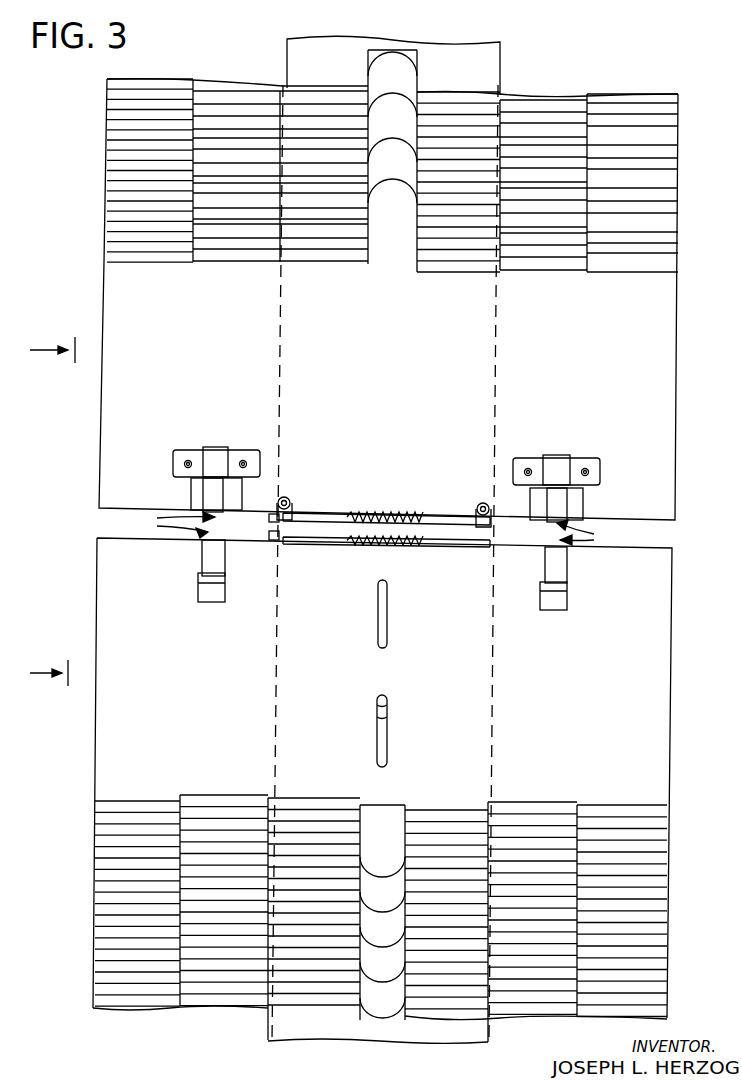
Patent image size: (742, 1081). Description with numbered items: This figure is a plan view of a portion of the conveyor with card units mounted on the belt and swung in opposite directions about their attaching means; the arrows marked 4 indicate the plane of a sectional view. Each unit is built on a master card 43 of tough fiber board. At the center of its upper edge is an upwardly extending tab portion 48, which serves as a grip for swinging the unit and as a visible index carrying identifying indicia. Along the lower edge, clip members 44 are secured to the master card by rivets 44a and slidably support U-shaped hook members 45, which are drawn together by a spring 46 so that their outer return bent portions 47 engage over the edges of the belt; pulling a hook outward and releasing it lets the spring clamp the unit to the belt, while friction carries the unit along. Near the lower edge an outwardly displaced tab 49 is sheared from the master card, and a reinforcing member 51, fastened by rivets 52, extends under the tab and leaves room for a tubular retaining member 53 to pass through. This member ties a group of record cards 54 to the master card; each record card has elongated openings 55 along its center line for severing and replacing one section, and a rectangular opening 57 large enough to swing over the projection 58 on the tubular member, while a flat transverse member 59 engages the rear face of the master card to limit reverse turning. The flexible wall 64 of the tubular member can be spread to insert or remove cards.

The master card 43 is at (655, 347).
The record card 54 is at (656, 268).
The tab portion 48 is at (380, 111).
The clip members 44 is at (288, 498).
The rivets 44a is at (478, 503).
The U-shaped hook members 45 is at (330, 543).
The spring 46 is at (400, 542).
The outer return bent portions 47 is at (270, 535).
The outwardly displaced tab 49 is at (212, 452).
The reinforcing member 51 is at (238, 450).
The rivets 52 is at (247, 464).
The tubular retaining member 53 is at (373, 529).
The elongated openings 55 is at (378, 613).
The rectangular opening 57 is at (210, 596).
The projection 58 is at (212, 580).
The flat transverse member 59 is at (198, 494).
The wall 64 is at (210, 556).
The section line 4- 4 is at (60, 511).